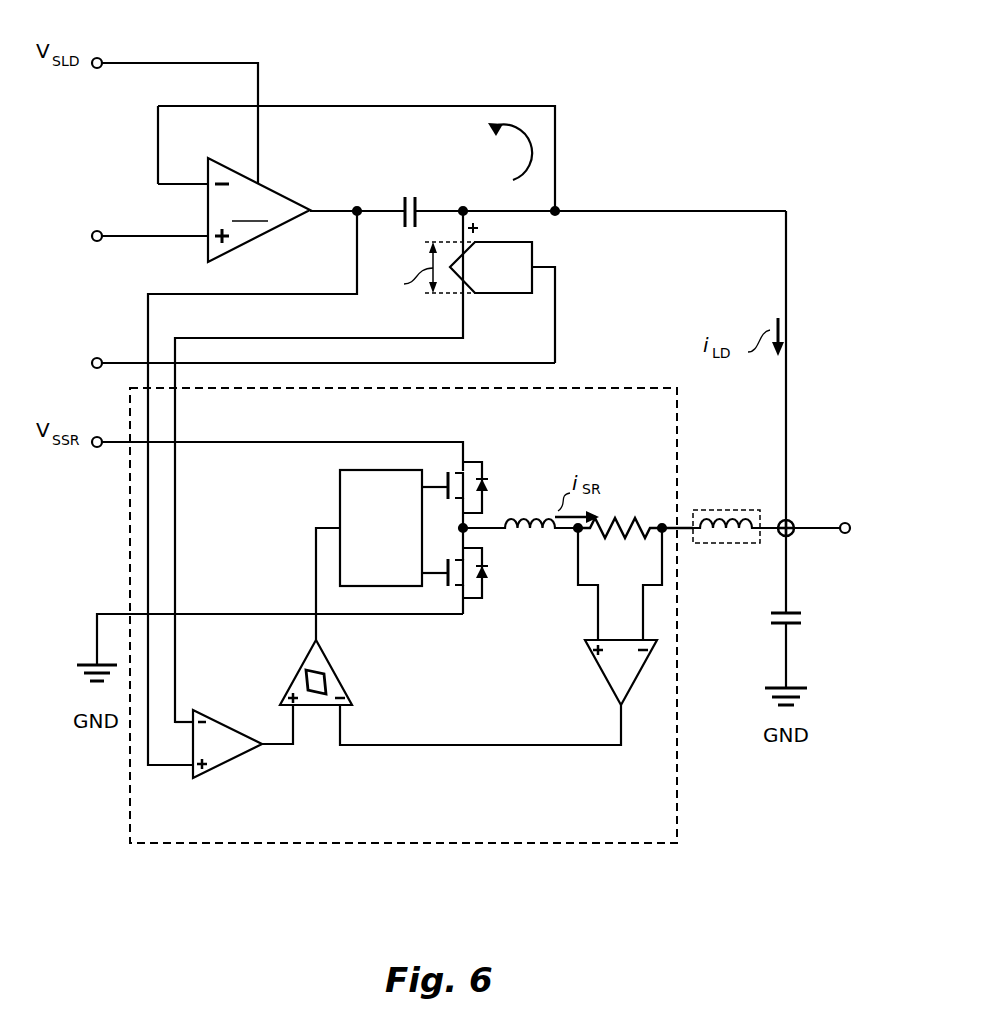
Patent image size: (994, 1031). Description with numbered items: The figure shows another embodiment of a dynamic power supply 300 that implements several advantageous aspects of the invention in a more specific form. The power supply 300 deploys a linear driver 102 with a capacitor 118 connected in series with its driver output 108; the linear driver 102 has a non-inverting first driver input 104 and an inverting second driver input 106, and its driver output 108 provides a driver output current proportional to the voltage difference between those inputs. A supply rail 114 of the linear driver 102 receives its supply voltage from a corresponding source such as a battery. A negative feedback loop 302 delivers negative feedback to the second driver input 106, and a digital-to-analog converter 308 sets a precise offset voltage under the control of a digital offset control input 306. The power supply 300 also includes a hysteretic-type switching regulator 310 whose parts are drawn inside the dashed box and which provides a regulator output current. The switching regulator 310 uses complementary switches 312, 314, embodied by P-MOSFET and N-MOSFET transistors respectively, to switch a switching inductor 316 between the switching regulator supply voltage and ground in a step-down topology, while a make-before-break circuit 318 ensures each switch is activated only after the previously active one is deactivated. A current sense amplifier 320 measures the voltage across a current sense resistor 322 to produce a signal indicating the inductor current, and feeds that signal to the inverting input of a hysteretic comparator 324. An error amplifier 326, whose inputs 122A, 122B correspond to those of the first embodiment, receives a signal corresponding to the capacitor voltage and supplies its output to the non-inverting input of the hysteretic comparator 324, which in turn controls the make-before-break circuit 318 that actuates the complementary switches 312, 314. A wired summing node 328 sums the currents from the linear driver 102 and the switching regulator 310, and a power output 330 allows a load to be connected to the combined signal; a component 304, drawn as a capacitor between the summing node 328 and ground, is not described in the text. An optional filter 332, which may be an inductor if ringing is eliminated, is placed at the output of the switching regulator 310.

The dynamic power supply 300 is at (632, 58).
The linear driver 102 is at (259, 210).
The first driver input 104 is at (96, 243).
The second driver input 106 is at (185, 187).
The driver output 108 is at (337, 216).
The supply rail 114 is at (258, 137).
The capacitor 118 is at (405, 195).
The negative feedback loop 302 is at (518, 182).
The output capacitor 304 is at (782, 620).
The digital offset control input 306 is at (95, 357).
The digital-to-analog converter 308 is at (505, 295).
The switching regulator 310 is at (280, 845).
The complementary switch 312 is at (457, 472).
The complementary switch 314 is at (456, 588).
The switching inductor 316 is at (535, 516).
The make-before-break circuit 318 is at (340, 488).
The current sense amplifier 320 is at (605, 677).
The current sense resistor 322 is at (632, 519).
The hysteretic comparator 324 is at (302, 671).
The error amplifier 326 is at (232, 760).
The input 122A is at (178, 767).
The input 122B is at (185, 722).
The summing node 328 is at (781, 540).
The power output 330 is at (845, 521).
The filter 332 is at (730, 511).